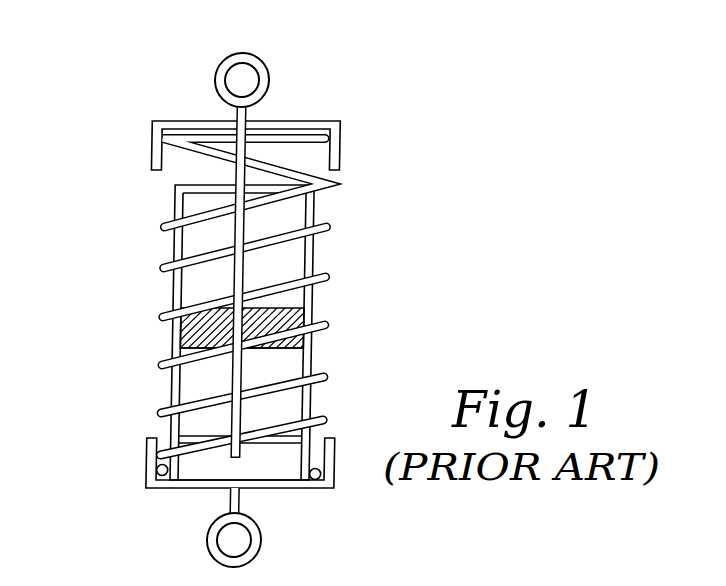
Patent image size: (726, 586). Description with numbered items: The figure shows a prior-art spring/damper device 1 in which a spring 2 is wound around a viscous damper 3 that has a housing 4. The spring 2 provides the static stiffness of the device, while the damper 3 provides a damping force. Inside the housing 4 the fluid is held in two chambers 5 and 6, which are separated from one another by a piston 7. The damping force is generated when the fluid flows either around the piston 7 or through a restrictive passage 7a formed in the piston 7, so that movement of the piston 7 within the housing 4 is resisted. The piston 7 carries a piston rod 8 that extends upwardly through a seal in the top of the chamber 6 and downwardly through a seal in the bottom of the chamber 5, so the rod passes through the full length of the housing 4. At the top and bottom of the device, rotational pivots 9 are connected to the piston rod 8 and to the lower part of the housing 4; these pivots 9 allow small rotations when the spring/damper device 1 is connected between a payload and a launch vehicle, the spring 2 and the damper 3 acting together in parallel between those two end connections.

The spring/damper device 1 is at (116, 284).
The spring 2 is at (163, 363).
The viscous damper 3 is at (333, 344).
The housing 4 is at (166, 241).
The chamber 5 is at (213, 390).
The chamber 6 is at (215, 249).
The piston 7 is at (305, 309).
The restrictive passage 7a is at (292, 350).
The piston rod 8 is at (247, 118).
The rotational pivots 9 is at (216, 74).